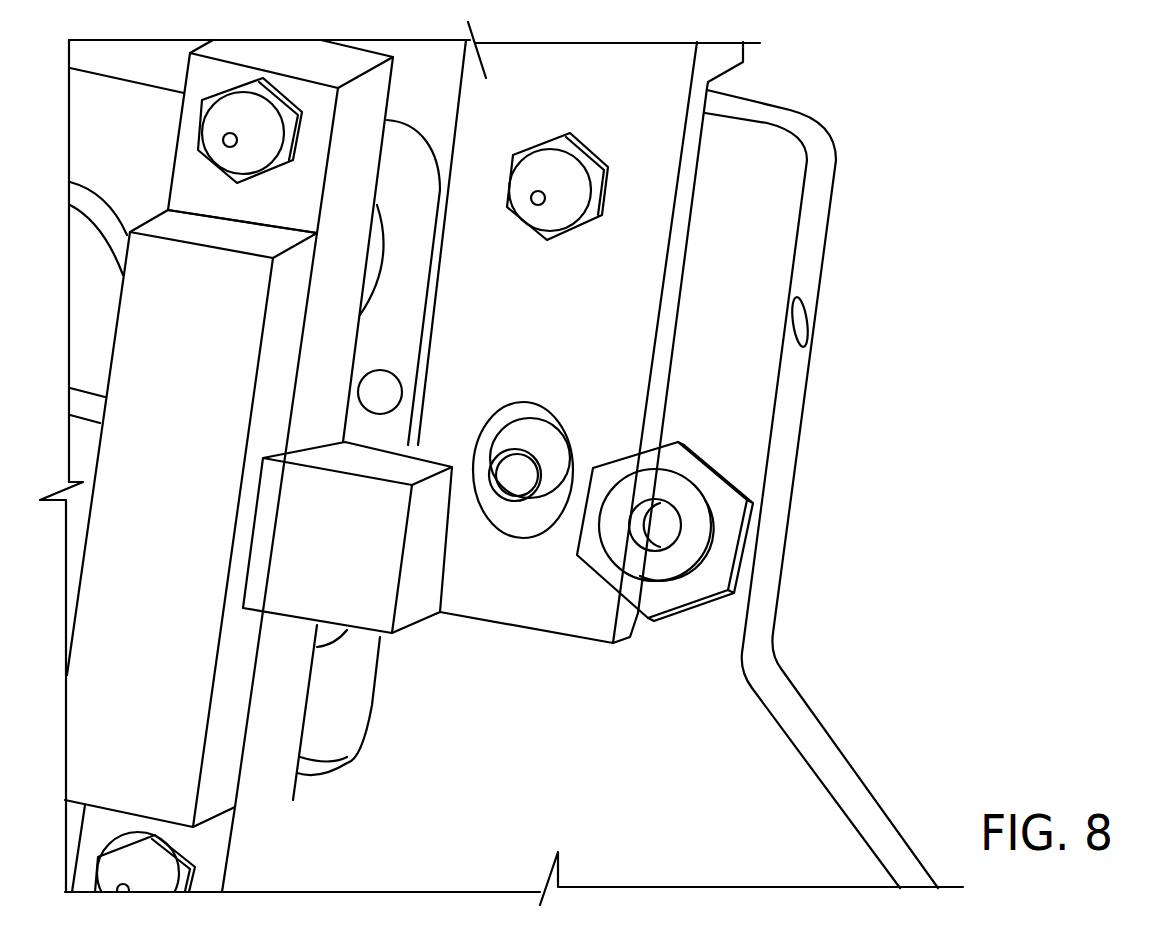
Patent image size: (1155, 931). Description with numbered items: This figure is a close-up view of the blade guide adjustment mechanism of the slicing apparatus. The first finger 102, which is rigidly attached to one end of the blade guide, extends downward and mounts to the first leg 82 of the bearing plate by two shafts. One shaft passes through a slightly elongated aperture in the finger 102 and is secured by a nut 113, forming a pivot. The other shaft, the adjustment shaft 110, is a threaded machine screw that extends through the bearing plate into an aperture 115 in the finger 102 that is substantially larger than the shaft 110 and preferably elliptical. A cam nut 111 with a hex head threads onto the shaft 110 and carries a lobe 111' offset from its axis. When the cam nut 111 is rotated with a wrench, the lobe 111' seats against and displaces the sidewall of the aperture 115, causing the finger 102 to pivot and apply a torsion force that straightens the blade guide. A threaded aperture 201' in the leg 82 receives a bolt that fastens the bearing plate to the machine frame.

The first leg 82 is at (826, 489).
The nut 113 is at (573, 186).
The first finger 102 is at (590, 267).
The threaded aperture 201' is at (869, 332).
The aperture 115 is at (567, 440).
The adjustment shaft 110 is at (517, 475).
The lobe 111' is at (766, 525).
The cam nut 111 is at (768, 531).